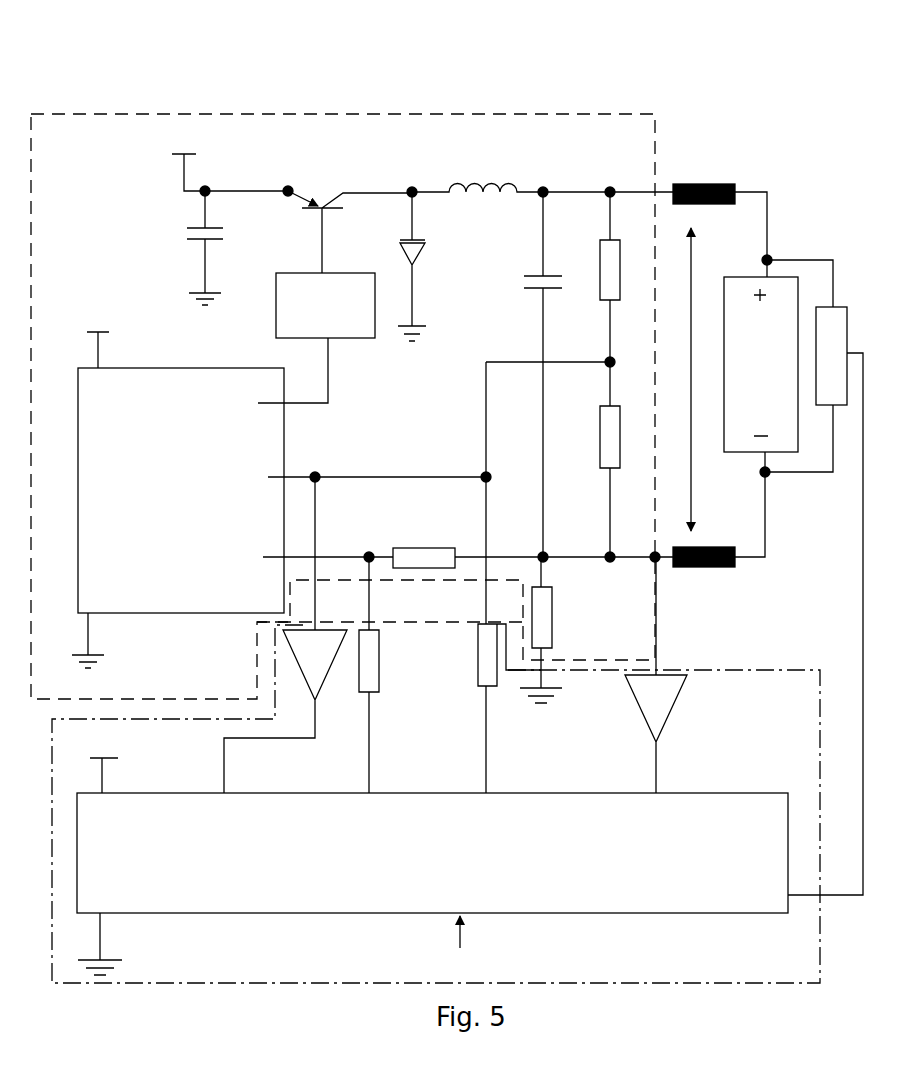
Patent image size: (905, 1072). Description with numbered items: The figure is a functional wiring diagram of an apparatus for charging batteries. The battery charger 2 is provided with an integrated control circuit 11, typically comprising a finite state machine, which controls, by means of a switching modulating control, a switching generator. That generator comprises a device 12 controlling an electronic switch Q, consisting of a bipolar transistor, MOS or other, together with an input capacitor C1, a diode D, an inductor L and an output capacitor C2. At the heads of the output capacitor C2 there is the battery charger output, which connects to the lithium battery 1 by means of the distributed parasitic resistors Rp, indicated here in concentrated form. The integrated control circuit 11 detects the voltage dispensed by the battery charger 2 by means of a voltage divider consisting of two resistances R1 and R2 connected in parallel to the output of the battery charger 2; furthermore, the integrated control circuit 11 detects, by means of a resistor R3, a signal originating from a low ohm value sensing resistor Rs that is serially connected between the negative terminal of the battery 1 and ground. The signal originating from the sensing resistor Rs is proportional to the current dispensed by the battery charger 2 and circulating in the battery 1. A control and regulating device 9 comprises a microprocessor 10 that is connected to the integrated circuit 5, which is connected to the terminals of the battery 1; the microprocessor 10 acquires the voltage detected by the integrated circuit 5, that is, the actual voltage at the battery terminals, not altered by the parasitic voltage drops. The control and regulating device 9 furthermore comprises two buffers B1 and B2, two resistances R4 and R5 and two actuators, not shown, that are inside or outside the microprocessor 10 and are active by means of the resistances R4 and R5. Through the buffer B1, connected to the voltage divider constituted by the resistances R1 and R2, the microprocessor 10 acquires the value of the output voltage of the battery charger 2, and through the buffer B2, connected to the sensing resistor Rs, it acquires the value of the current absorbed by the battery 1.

The battery 1 is at (737, 312).
The battery charger 2 is at (335, 114).
The integrated circuit 5 is at (842, 337).
The control and regulating device 9 is at (665, 983).
The microprocessor 10 is at (560, 870).
The integrated control circuit 11 is at (130, 430).
The device controlling an electronic switch 12 is at (310, 312).
The input capacitor C1 is at (200, 228).
The output capacitor C2 is at (523, 266).
The electronic switch Q is at (316, 203).
The diode D is at (415, 258).
The inductor L is at (468, 182).
The resistance R1 is at (610, 258).
The resistance R2 is at (608, 428).
The resistor R3 is at (412, 560).
The resistance R4 is at (368, 650).
The resistance R5 is at (482, 670).
The sensing resistor Rs is at (545, 608).
The parasitic resistors Rp is at (702, 379).
The buffer B1 is at (312, 672).
The buffer B2 is at (658, 695).